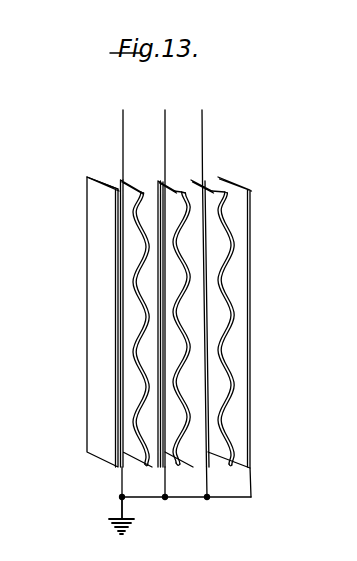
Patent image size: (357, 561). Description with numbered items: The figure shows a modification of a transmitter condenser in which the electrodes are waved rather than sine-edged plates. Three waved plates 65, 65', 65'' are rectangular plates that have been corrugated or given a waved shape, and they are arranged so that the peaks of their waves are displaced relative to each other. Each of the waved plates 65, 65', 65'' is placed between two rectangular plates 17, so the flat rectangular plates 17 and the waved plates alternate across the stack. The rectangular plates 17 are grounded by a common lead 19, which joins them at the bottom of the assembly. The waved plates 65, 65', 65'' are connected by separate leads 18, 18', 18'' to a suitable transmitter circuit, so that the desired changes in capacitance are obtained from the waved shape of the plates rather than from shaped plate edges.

The rectangular plate 17 is at (100, 300).
The lead 18 is at (99, 303).
The lead 18' is at (180, 292).
The lead 18'' is at (228, 303).
The common lead 19 is at (185, 497).
The waved plate 65 is at (86, 322).
The waved plate 65' is at (164, 306).
The waved plate 65'' is at (257, 337).